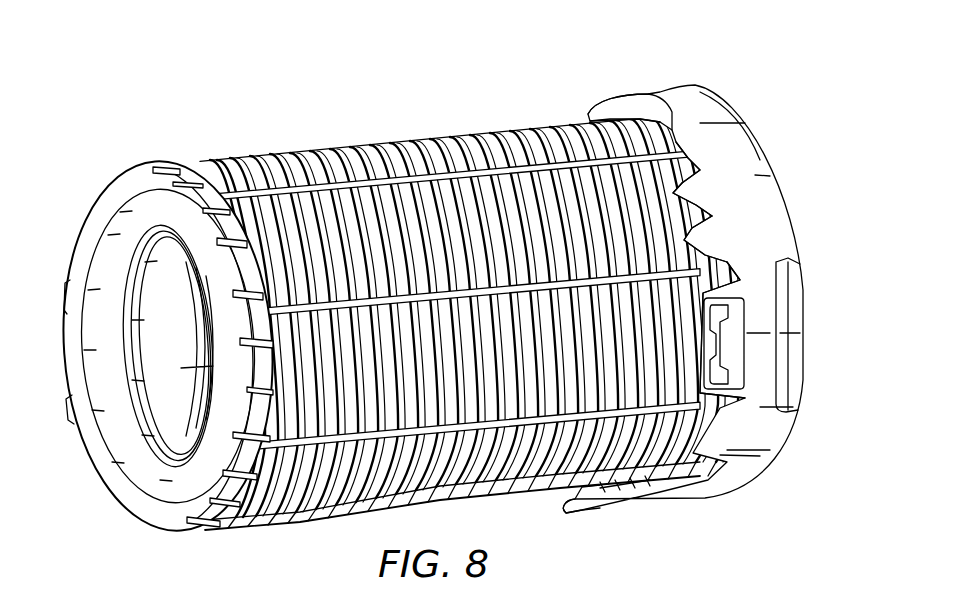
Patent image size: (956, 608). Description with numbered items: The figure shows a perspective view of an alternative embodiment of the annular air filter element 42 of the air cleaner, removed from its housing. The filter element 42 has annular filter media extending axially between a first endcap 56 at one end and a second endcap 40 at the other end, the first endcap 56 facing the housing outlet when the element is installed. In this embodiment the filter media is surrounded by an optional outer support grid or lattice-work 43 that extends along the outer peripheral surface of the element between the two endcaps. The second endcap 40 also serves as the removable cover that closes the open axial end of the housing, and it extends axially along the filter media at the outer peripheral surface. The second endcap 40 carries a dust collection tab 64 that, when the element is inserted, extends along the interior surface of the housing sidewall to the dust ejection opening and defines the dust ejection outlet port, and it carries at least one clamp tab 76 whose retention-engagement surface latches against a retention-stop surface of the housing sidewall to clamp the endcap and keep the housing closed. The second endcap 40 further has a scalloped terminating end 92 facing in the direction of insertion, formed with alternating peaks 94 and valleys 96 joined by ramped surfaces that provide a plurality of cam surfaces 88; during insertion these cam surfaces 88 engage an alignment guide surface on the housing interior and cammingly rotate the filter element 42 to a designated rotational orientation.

The second endcap 40 is at (662, 281).
The air filter element 42 is at (472, 306).
The outer support grid or lattice-work 43 is at (264, 160).
The first endcap 56 is at (153, 160).
The dust collection tab 64 is at (565, 498).
The clamp tab 76 is at (705, 313).
The cam surface 88 is at (673, 178).
The scalloped terminating end 92 is at (578, 122).
The peaks 94 is at (695, 238).
The valleys 96 is at (677, 192).